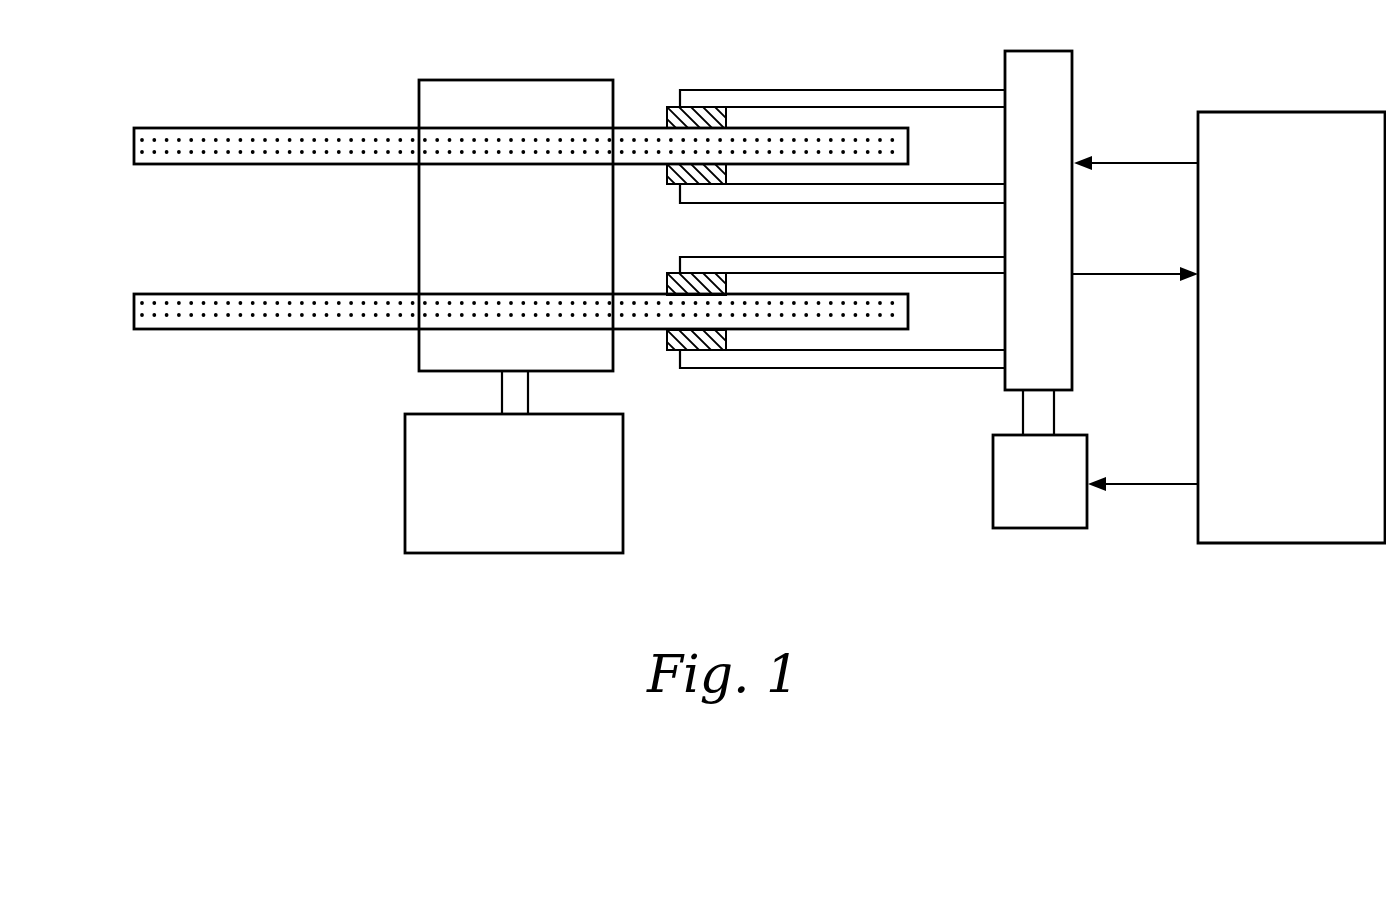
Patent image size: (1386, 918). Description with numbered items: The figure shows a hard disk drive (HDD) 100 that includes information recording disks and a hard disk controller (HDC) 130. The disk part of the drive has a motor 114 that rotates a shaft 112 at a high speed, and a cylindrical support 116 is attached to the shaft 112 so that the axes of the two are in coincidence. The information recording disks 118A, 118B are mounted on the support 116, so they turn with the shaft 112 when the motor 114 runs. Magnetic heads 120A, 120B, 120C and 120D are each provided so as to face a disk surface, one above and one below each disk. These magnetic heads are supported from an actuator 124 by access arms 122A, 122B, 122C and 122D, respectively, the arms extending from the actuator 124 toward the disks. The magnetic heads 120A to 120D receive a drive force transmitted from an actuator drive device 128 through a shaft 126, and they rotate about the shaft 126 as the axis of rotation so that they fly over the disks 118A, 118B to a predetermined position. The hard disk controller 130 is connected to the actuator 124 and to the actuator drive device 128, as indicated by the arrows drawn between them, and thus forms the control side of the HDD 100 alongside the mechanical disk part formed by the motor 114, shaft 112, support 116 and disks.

The hard disk drive (HDD) 100 is at (292, 82).
The shaft 112 is at (501, 387).
The motor 114 is at (537, 516).
The cylindrical support 116 is at (470, 79).
The information recording disk 118A is at (166, 127).
The information recording disk 118B is at (166, 330).
The magnetic head 120A is at (669, 108).
The magnetic head 120B is at (670, 183).
The magnetic head 120C is at (670, 273).
The magnetic head 120D is at (670, 351).
The access arm 122A is at (802, 89).
The access arm 122B is at (852, 204).
The access arm 122C is at (827, 256).
The access arm 122D is at (815, 369).
The actuator 124 is at (1076, 66).
The shaft 126 is at (1022, 424).
The actuator drive device 128 is at (992, 488).
The hard disk controller (HDC) 130 is at (1318, 420).